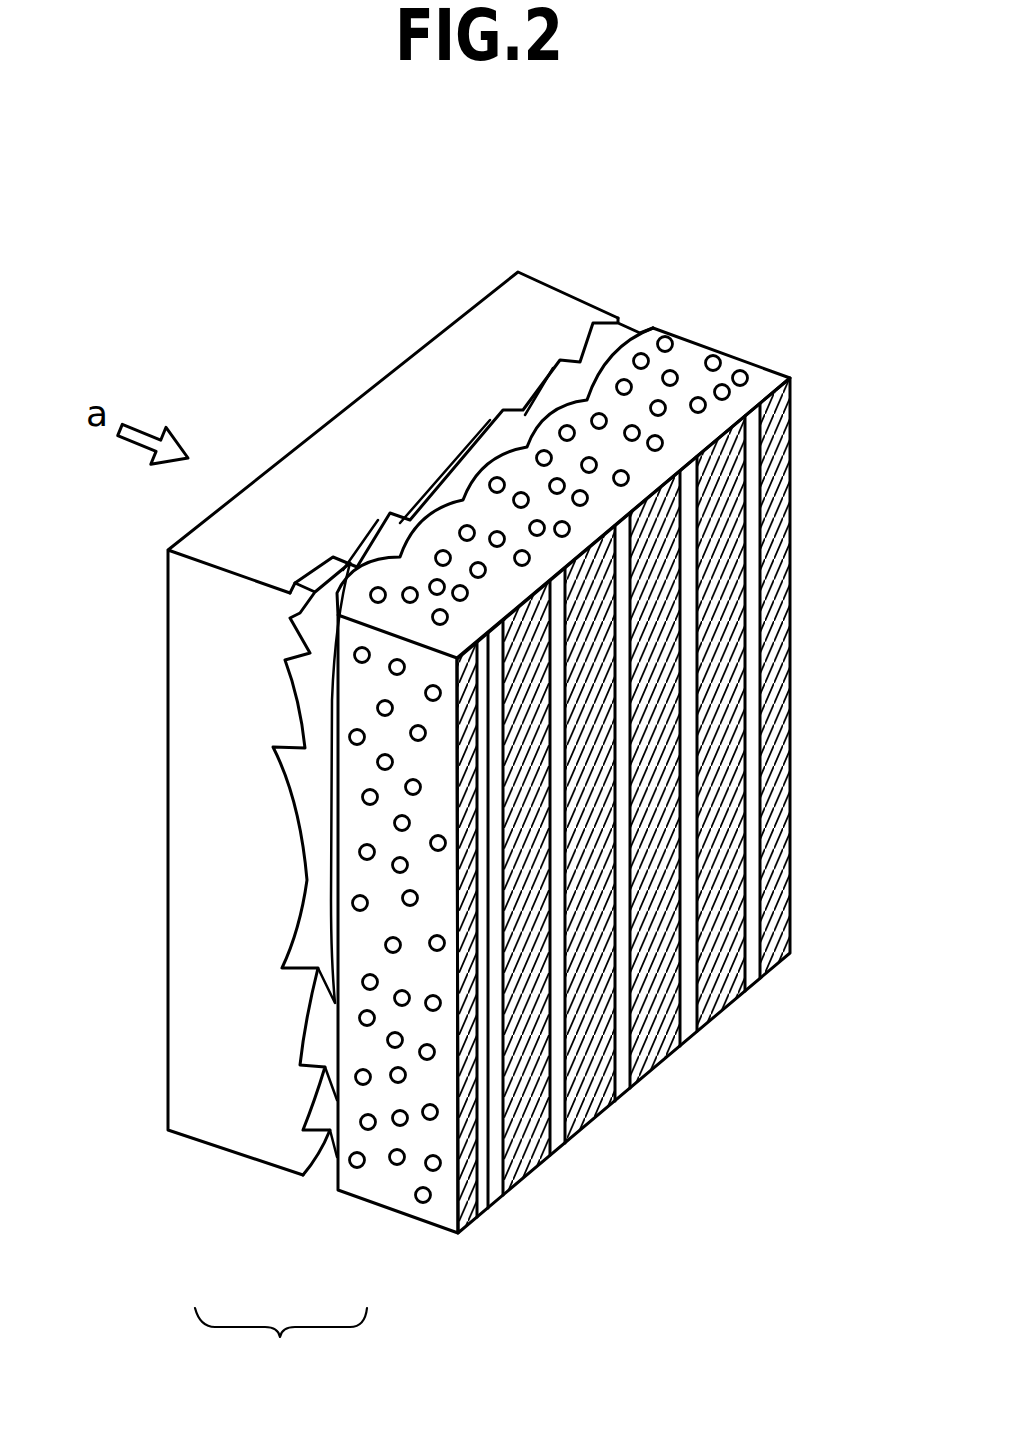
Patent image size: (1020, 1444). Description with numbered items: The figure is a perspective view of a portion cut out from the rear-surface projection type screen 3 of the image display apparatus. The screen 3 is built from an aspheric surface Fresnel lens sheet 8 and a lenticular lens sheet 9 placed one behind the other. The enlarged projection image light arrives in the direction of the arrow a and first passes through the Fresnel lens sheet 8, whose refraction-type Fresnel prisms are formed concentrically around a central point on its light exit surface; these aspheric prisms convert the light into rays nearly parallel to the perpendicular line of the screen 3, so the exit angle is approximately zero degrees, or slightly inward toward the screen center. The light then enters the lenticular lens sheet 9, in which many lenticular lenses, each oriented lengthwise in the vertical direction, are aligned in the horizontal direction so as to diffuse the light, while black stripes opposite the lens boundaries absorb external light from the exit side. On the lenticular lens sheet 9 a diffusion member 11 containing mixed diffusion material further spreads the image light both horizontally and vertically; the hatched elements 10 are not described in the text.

The rear-surface projection type screen 3 is at (268, 1382).
The Fresnel lens sheet 8 is at (240, 1135).
The lenticular lens sheet 9 is at (402, 1185).
The partition plates 10 is at (520, 1152).
The diffusion member 11 is at (675, 381).